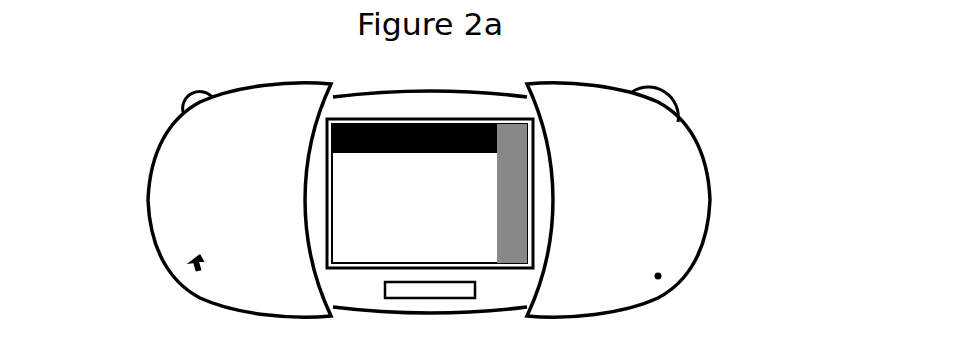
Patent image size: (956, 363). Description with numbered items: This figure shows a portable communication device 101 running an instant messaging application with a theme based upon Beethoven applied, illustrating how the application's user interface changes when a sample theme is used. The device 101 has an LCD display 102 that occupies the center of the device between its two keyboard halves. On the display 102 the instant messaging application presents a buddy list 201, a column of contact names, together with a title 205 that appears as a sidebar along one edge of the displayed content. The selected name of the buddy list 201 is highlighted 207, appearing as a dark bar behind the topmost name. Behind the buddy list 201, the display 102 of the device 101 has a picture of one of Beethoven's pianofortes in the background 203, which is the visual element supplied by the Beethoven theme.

The portable communication device 101 is at (368, 77).
The LCD display 102 is at (455, 118).
The buddy list 201 is at (378, 184).
The background 203 is at (435, 212).
The highlight 207 is at (450, 152).
The title 205 is at (520, 250).